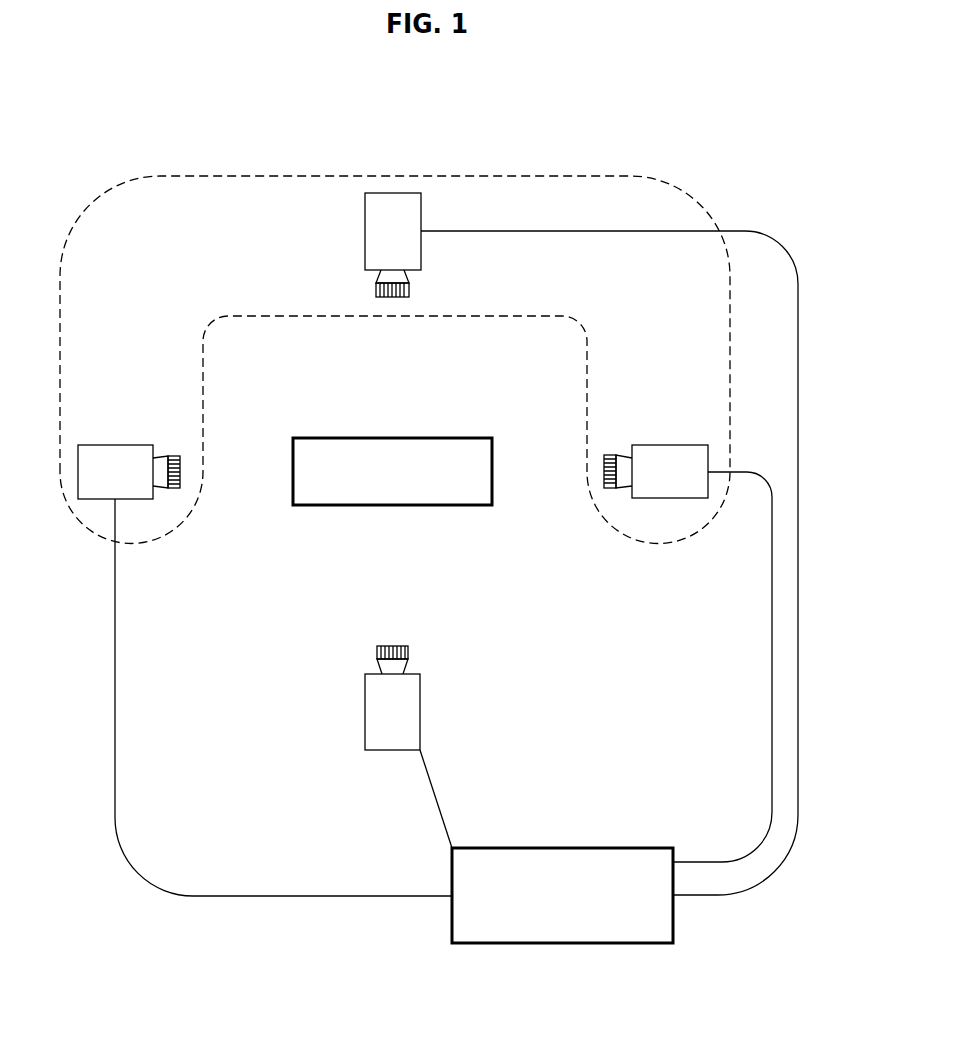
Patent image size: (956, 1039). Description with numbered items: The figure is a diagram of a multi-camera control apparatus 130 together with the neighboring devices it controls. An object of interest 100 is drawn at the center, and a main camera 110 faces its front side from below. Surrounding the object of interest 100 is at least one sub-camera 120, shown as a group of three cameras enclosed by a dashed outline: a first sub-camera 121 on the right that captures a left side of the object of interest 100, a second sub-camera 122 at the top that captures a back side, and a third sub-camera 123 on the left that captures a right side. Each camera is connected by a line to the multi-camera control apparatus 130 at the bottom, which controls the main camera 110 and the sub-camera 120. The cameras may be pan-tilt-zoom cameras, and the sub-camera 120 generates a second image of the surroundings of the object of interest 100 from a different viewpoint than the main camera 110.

The object of interest 100 is at (395, 438).
The main camera 110 is at (365, 712).
The sub-camera 120 is at (394, 176).
The first sub-camera 121 is at (668, 445).
The second sub-camera 122 is at (365, 231).
The third sub-camera 123 is at (114, 445).
The multi-camera control apparatus 130 is at (562, 848).